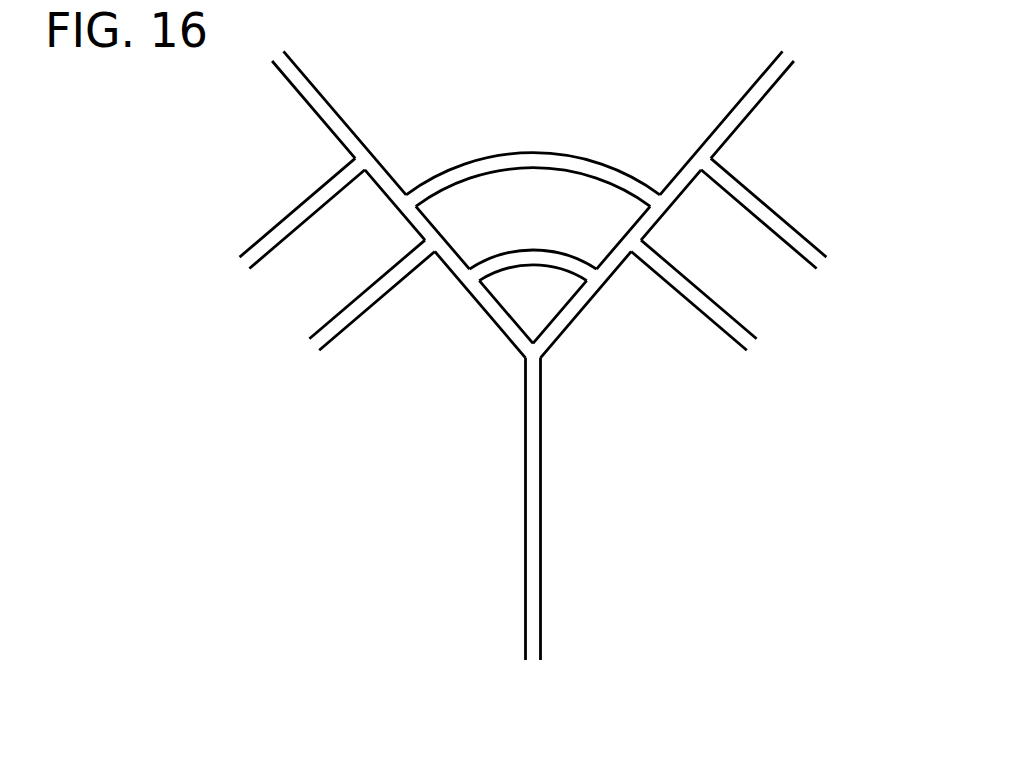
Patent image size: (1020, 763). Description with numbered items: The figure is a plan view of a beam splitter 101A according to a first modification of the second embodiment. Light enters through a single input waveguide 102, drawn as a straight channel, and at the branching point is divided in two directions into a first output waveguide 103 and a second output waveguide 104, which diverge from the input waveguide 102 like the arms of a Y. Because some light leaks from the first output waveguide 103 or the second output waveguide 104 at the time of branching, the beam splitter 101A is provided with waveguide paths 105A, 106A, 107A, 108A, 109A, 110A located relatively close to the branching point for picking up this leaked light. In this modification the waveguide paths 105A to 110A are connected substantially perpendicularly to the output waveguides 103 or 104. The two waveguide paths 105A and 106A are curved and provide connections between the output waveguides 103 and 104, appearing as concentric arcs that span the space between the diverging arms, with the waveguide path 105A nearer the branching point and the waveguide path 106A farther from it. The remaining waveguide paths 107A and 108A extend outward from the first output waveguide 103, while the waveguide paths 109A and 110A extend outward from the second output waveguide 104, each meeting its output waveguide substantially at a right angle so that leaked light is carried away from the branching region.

The beam splitter 101A is at (307, 533).
The input waveguide 102 is at (530, 510).
The first output waveguide 103 is at (313, 97).
The second output waveguide 104 is at (743, 110).
The waveguide path 105A is at (512, 260).
The waveguide path 106A is at (512, 160).
The waveguide path 107A is at (382, 283).
The waveguide path 108A is at (310, 202).
The waveguide path 109A is at (692, 295).
The waveguide path 110A is at (758, 208).